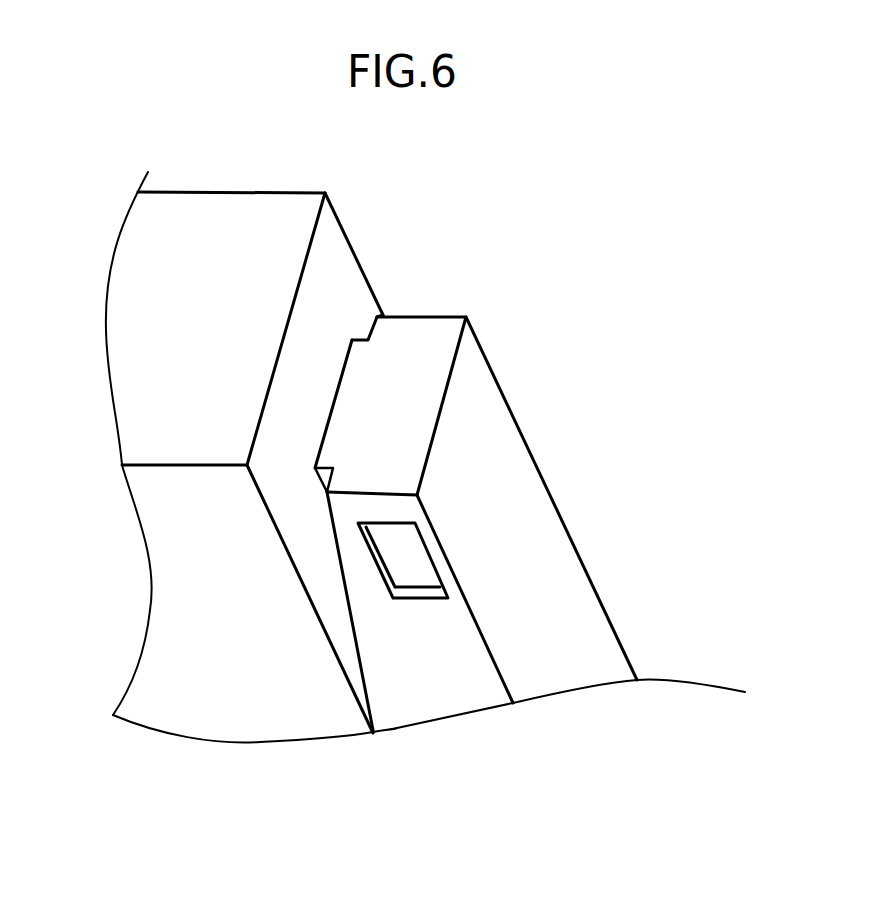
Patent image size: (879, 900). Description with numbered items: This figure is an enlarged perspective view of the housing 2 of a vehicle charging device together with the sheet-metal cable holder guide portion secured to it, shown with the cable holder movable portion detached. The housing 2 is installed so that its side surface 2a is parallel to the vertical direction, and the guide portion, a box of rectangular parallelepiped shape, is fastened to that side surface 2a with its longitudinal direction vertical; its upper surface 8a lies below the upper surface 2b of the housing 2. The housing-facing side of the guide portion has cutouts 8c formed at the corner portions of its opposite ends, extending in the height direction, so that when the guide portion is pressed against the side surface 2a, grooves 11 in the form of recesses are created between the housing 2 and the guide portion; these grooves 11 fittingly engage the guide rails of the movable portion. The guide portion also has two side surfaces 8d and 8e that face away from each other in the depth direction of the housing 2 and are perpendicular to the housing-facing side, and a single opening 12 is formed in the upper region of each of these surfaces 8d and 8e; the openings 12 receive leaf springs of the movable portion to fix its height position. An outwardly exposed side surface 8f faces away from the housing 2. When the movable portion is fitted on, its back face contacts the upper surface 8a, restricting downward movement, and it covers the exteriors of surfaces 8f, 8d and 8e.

The housing 2 is at (192, 184).
The side surface of the housing 2a is at (342, 251).
The upper surface of the housing 2b is at (255, 223).
The upper surface of the cable holder guide portion 8a is at (417, 352).
The cutouts 8c is at (367, 317).
The side surface of the cable holder guide portion 8d is at (468, 690).
The side surface of the cable holder guide portion 8e is at (508, 404).
The outwardly exposed side surface 8f is at (495, 490).
The grooves 11 is at (372, 318).
The openings 12 is at (432, 563).